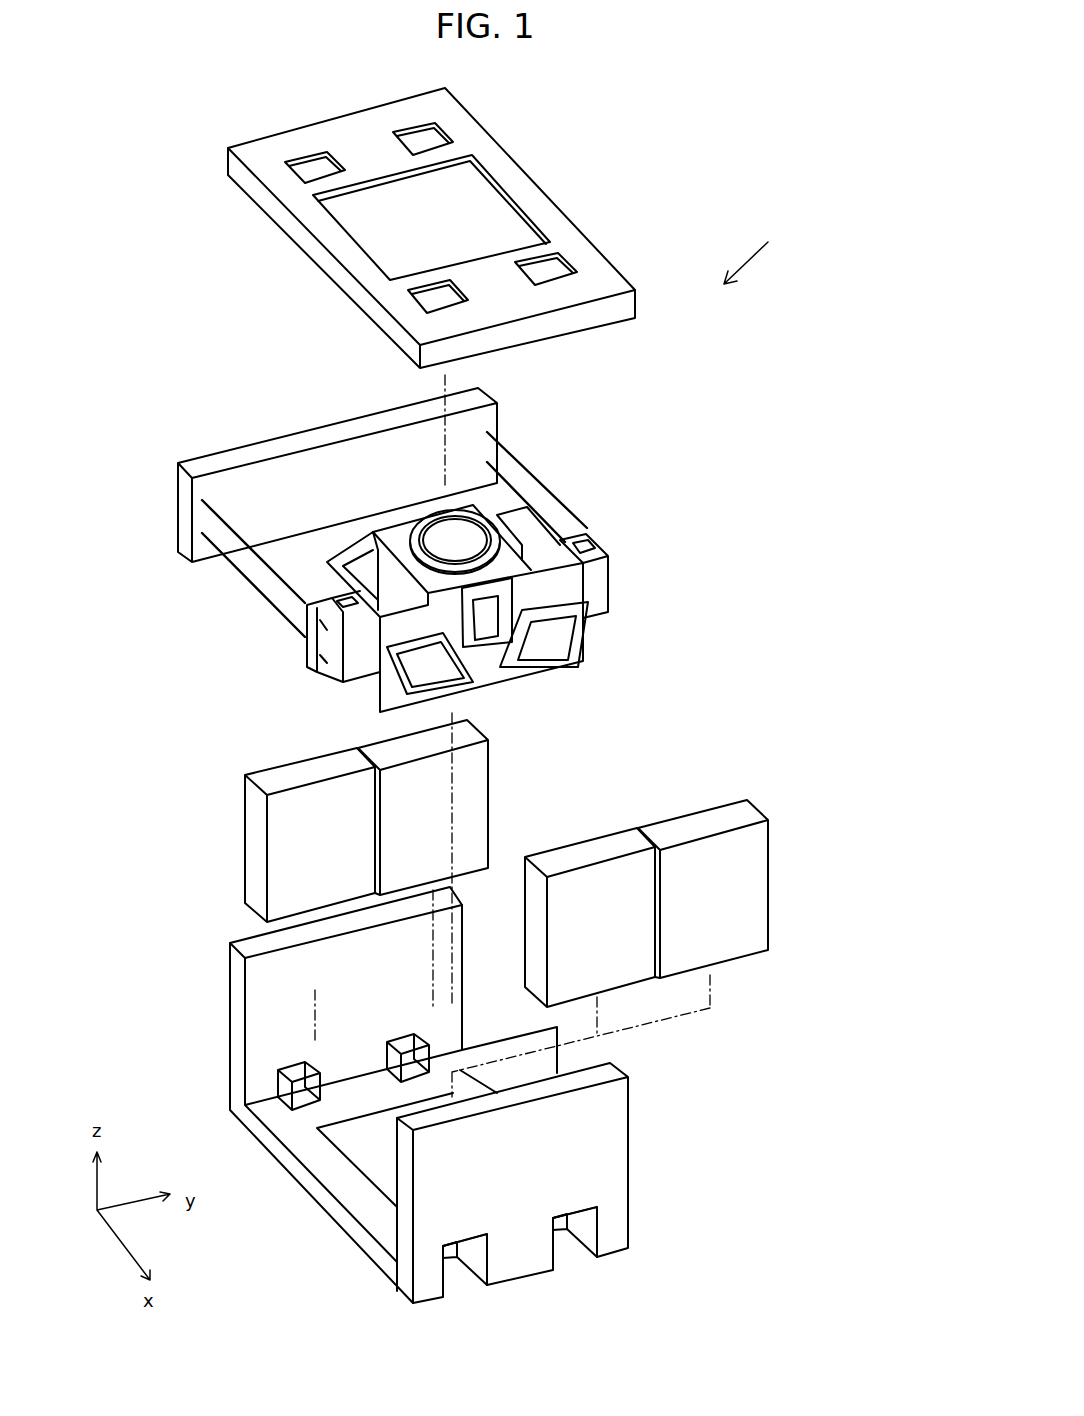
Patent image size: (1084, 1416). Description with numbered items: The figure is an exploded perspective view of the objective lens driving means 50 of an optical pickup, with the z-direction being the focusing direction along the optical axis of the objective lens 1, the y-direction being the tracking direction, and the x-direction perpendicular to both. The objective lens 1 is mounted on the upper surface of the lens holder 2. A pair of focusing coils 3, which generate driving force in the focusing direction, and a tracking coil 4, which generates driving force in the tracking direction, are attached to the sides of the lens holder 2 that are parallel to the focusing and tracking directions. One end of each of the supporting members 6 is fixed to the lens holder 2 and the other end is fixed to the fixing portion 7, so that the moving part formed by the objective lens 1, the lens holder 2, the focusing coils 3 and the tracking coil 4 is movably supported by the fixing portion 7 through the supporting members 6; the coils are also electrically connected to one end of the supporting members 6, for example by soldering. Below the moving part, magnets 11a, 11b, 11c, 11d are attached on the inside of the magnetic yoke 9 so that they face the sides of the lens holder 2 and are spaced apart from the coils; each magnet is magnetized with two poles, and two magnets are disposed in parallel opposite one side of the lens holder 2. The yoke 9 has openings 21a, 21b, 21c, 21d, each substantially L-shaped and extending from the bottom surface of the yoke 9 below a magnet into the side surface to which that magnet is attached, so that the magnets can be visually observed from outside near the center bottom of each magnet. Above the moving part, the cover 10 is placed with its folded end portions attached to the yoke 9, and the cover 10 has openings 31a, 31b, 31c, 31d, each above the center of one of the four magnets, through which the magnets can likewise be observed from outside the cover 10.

The objective lens 1 is at (443, 538).
The lens holder 2 is at (547, 590).
The focusing coils 3 is at (547, 670).
The tracking coil 4 is at (483, 642).
The supporting members 6 is at (523, 486).
The fixing portion 7 is at (250, 455).
The magnetic yoke 9 is at (585, 1160).
The cover 10 is at (505, 172).
The magnet 11a is at (288, 847).
The magnet 11b is at (412, 782).
The magnet 11c is at (612, 943).
The magnet 11d is at (727, 878).
The opening 21a is at (298, 1100).
The opening 21b is at (405, 1062).
The opening 21c is at (455, 1273).
The opening 21d is at (560, 1242).
The opening 31a is at (305, 172).
The opening 31b is at (428, 142).
The opening 31c is at (440, 298).
The opening 31d is at (555, 272).
The objective lens driving means 50 is at (772, 243).